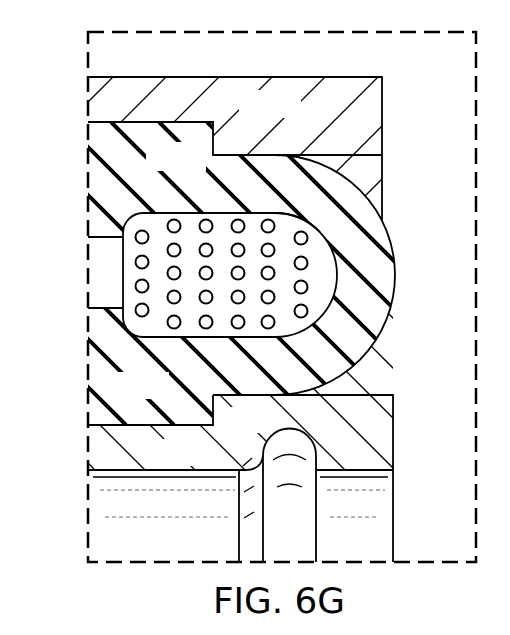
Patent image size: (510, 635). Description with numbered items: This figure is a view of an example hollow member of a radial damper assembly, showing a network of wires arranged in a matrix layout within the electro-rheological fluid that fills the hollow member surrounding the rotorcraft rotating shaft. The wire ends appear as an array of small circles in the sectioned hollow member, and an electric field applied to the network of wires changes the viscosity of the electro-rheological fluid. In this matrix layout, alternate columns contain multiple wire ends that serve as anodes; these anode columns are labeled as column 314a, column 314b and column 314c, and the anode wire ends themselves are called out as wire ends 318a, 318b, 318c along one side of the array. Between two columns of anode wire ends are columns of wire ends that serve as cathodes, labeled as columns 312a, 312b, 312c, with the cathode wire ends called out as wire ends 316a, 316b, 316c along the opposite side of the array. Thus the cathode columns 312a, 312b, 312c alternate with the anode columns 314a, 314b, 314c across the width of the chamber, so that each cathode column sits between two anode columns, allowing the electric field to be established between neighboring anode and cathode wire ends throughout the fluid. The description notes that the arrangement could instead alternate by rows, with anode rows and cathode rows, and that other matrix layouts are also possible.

The cathode column 312a is at (148, 341).
The cathode column 312b is at (207, 345).
The cathode column 312c is at (267, 345).
The anode column 314a is at (173, 210).
The anode column 314b is at (240, 210).
The anode column 314c is at (306, 215).
The cathode wire end 316a is at (136, 231).
The cathode wire end 316b is at (136, 262).
The cathode wire end 316c is at (136, 307).
The anode wire end 318a is at (307, 243).
The anode wire end 318b is at (307, 266).
The anode wire end 318c is at (307, 313).